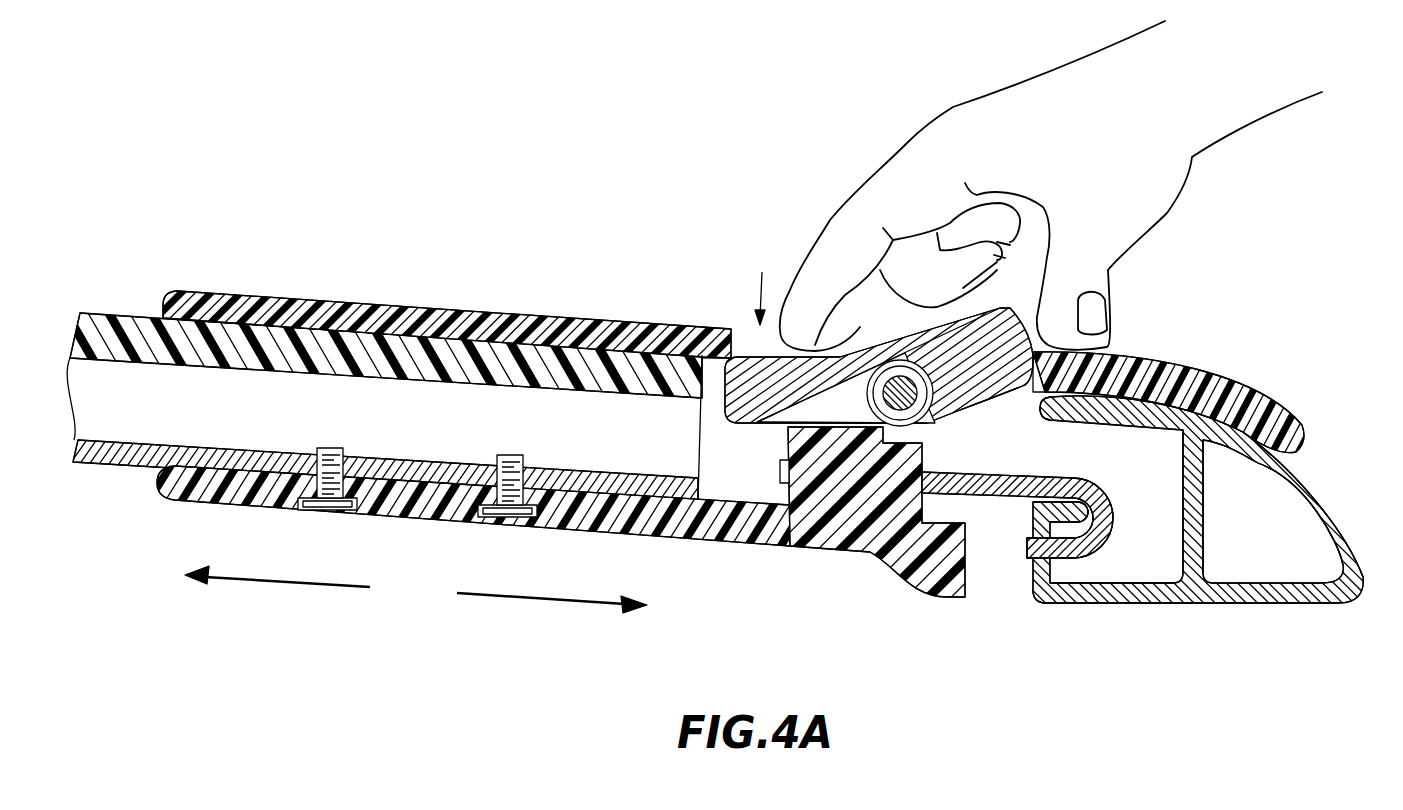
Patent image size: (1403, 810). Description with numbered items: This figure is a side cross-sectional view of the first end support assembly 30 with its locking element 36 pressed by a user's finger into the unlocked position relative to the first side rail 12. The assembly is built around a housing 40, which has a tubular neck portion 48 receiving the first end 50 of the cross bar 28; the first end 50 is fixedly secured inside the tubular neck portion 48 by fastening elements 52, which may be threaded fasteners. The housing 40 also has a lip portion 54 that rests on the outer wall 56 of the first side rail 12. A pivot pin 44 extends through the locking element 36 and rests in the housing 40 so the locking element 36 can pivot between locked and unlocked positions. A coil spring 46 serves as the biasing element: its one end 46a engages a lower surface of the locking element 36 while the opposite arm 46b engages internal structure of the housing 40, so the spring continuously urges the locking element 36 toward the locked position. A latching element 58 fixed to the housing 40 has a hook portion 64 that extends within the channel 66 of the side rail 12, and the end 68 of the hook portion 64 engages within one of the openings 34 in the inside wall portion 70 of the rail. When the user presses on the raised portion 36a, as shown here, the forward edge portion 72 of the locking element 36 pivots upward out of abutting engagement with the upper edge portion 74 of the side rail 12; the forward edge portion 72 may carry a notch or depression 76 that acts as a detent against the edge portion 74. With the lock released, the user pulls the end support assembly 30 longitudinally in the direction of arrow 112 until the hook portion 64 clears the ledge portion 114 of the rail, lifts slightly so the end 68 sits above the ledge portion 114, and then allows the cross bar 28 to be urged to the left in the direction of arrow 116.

The first side rail 12 is at (1160, 500).
The cross bar 28 is at (85, 463).
The first end support assembly 30 is at (352, 283).
The openings 34 is at (1027, 548).
The locking element 36 is at (700, 420).
The raised portion 36a is at (742, 355).
The housing 40 is at (920, 572).
The pivot pin 44 is at (985, 312).
The coil spring 46 is at (860, 385).
The end of biasing element 46a is at (855, 355).
The opposite arm of biasing element 46b is at (770, 432).
The tubular neck portion 48 is at (228, 500).
The first end of cross bar 50 is at (137, 465).
The fastening elements 52 is at (506, 518).
The lip portion 54 is at (1277, 400).
The outer wall 56 is at (1317, 487).
The latching element 58 is at (985, 476).
The hook portion 64 is at (1115, 518).
The channel 66 is at (1160, 567).
The end of hook portion 68 is at (1073, 558).
The inside wall portion 70 is at (1040, 592).
The forward edge portion 72 is at (980, 392).
The upper edge portion 74 is at (1040, 412).
The notch or depression 76 is at (1005, 386).
The arrow 112 is at (543, 600).
The ledge portion 114 is at (1033, 506).
The arrow 116 is at (287, 582).